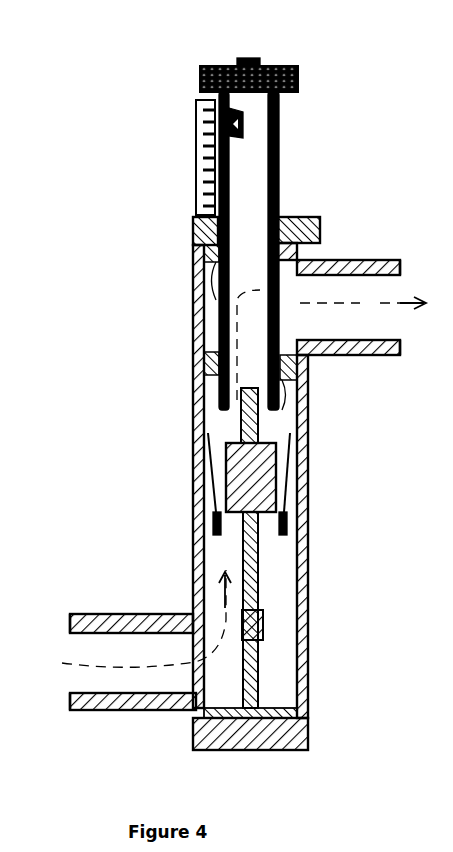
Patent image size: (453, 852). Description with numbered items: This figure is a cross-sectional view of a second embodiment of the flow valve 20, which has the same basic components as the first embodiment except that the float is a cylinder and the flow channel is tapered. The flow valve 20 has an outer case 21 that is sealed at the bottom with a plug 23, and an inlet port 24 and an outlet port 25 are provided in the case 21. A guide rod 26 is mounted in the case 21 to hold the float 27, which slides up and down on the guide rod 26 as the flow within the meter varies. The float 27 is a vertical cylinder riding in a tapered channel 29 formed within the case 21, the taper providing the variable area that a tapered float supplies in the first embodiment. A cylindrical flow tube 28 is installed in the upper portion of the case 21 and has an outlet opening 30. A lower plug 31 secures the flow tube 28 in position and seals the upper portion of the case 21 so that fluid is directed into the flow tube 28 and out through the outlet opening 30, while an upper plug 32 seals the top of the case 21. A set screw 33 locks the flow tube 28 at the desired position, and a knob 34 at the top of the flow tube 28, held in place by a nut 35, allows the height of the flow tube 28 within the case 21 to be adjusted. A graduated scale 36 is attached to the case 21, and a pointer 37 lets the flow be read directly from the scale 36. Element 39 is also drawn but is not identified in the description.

The flow valve 20 is at (93, 68).
The outer case 21 is at (192, 392).
The plug 23 is at (194, 742).
The inlet port 24 is at (60, 672).
The outlet port 25 is at (360, 316).
The guide rod 26 is at (262, 580).
The float 27 is at (284, 560).
The flow tube 28 is at (288, 147).
The float channel 29 is at (218, 445).
The outlet opening 30 is at (245, 352).
The lower plug 31 is at (306, 385).
The upper plug 32 is at (198, 290).
The set screw 33 is at (312, 226).
The knob 34 is at (299, 78).
The nut 35 is at (240, 62).
The graduated scale 36 is at (195, 140).
The pointer 37 is at (233, 138).
The plate 39 is at (302, 692).